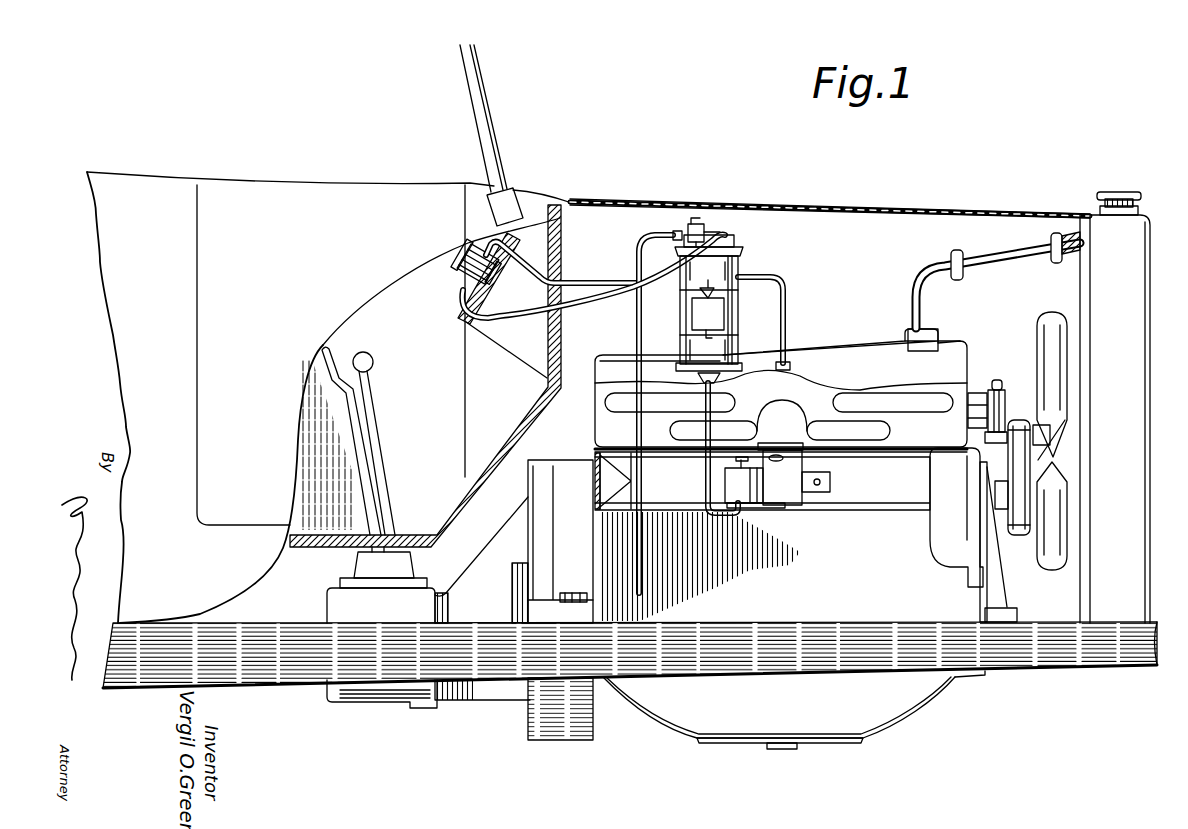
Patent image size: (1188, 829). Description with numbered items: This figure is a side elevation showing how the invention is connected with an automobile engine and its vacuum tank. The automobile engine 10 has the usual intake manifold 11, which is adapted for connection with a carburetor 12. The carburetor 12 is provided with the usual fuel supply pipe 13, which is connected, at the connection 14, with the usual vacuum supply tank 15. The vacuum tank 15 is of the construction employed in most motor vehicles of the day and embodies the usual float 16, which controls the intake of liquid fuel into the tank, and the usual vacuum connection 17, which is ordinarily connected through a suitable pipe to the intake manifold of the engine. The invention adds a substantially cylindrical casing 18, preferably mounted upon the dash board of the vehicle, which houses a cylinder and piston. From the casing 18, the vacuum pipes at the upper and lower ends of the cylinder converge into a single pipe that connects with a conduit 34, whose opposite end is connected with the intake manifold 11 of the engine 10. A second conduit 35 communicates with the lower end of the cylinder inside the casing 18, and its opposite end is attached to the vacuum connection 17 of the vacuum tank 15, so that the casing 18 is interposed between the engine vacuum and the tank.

The automobile engine 10 is at (868, 336).
The intake manifold 11 is at (826, 396).
The carburetor 12 is at (794, 506).
The fuel supply pipe 13 is at (740, 519).
The connection 14 is at (718, 383).
The vacuum supply tank 15 is at (740, 270).
The float 16 is at (725, 312).
The vacuum connection 17 is at (696, 232).
The cylindrical casing 18 is at (472, 266).
The conduit 34 is at (608, 282).
The second conduit 35 is at (610, 304).